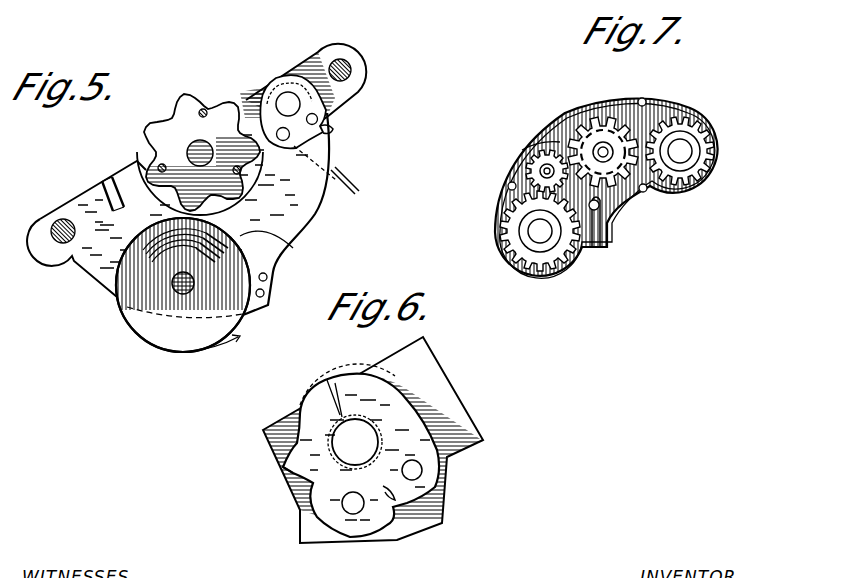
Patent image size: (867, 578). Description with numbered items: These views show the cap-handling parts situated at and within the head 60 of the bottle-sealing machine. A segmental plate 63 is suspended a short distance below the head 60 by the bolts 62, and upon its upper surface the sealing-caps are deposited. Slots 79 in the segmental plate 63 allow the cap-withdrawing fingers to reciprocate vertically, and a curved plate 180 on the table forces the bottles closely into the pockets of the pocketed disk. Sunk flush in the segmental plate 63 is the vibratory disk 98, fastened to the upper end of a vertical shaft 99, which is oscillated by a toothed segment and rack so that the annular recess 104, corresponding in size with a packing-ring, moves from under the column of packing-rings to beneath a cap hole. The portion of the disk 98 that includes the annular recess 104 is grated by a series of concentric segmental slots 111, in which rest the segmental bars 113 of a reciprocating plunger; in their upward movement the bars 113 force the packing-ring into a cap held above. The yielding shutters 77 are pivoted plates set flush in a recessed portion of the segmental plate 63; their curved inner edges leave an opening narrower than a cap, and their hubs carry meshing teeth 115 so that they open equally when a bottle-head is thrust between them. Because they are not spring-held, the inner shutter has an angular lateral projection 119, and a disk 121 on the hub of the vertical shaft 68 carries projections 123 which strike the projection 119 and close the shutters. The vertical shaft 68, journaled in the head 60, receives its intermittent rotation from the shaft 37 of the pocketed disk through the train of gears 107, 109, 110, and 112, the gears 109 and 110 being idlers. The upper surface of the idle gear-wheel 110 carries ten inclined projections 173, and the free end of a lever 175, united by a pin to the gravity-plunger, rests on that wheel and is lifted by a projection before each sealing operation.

In FIG. 7, the shaft 37 is at (682, 150).
In FIG. 7, the head 60 is at (613, 238).
In FIG. 5, the bolts 62 is at (53, 238).
In FIG. 5, the segmental plate 63 is at (107, 278).
In FIG. 6, the segmental plate 63 is at (457, 390).
In FIG. 5, the vertical shaft 68 is at (198, 150).
In FIG. 7, the vertical shaft 68 is at (540, 234).
In FIG. 5, the yielding shutters 77 is at (288, 91).
In FIG. 6, the yielding shutters 77 is at (367, 390).
In FIG. 5, the slots 79 is at (105, 177).
In FIG. 5, the disk 98 is at (232, 312).
In FIG. 5, the vertical shaft 99 is at (180, 290).
In FIG. 5, the annular recess 104 is at (213, 358).
In FIG. 7, the gear 107 is at (505, 222).
In FIG. 7, the idler gear 109 is at (530, 156).
In FIG. 7, the idle spur gear-wheel 110 is at (602, 117).
In FIG. 5, the concentric segmental slots 111 is at (209, 297).
In FIG. 7, the gear 112 is at (688, 124).
In FIG. 5, the segmental bars 113 is at (290, 249).
In FIG. 5, the teeth 115 is at (334, 131).
In FIG. 6, the teeth 115 is at (394, 500).
In FIG. 5, the angular lateral projection 119 is at (262, 92).
In FIG. 6, the angular lateral projection 119 is at (276, 447).
In FIG. 5, the disk 121 is at (190, 120).
In FIG. 5, the projections 123 is at (205, 100).
In FIG. 7, the inclined projections 173 is at (582, 118).
In FIG. 7, the lever 175 is at (602, 228).
In FIG. 5, the curved plate 180 is at (340, 177).